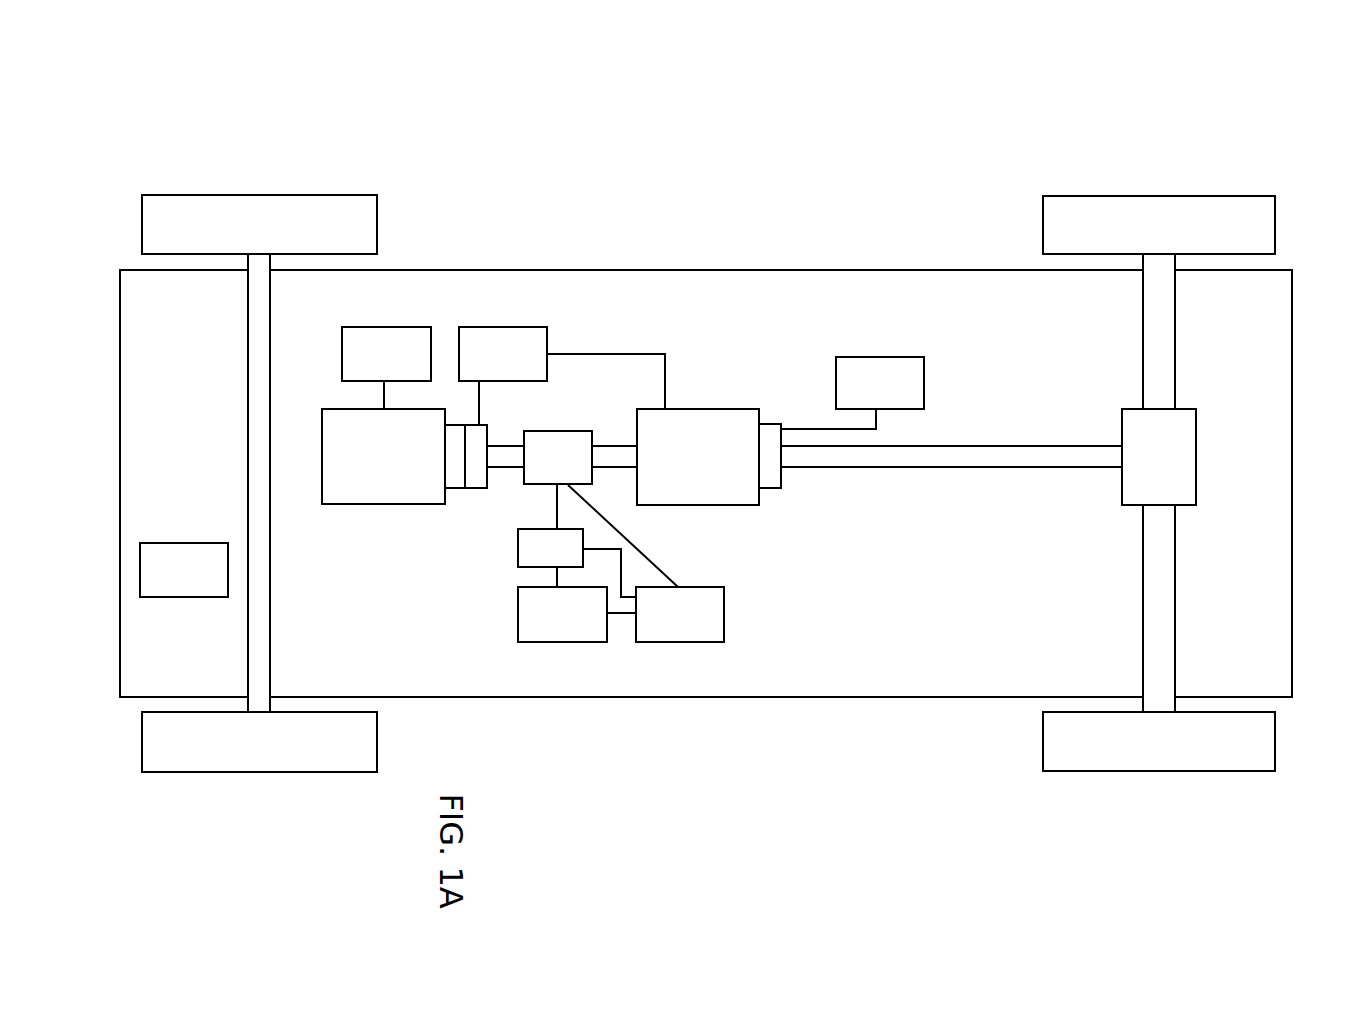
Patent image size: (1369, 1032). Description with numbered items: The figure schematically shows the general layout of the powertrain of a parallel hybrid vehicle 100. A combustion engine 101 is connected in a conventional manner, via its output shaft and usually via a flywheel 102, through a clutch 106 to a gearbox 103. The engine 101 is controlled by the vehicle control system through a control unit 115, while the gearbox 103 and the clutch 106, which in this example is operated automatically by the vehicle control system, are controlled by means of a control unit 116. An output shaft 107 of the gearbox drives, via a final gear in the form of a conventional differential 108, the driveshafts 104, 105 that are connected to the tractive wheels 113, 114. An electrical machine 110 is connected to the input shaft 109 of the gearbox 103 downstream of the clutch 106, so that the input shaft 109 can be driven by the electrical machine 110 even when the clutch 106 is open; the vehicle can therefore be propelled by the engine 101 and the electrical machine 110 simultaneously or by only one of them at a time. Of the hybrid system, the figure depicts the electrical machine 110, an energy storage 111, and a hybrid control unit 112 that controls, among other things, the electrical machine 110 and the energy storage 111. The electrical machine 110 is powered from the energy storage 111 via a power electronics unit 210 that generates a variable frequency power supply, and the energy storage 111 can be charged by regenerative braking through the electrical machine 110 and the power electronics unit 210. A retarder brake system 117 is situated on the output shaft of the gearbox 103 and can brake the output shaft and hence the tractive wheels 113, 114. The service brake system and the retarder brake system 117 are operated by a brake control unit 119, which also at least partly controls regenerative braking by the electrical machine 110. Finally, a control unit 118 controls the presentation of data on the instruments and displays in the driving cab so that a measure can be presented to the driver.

The hybrid vehicle 100 is at (604, 99).
The combustion engine 101 is at (352, 505).
The flywheel 102 is at (453, 489).
The gearbox 103 is at (700, 419).
The driveshaft 104 is at (1163, 329).
The driveshaft 105 is at (1170, 617).
The clutch 106 is at (478, 489).
The output shaft 107 is at (1036, 462).
The differential 108 is at (1192, 452).
The input shaft 109 is at (596, 469).
The electrical machine 110 is at (567, 438).
The energy storage 111 is at (584, 630).
The hybrid control unit 112 is at (682, 628).
The tractive wheel 113 is at (1271, 218).
The tractive wheel 114 is at (1271, 745).
The control unit 115 is at (388, 356).
The control unit 116 is at (534, 345).
The retarder brake system 117 is at (772, 437).
The control unit 118 is at (186, 583).
The brake control unit 119 is at (882, 367).
The power electronics unit 210 is at (518, 558).